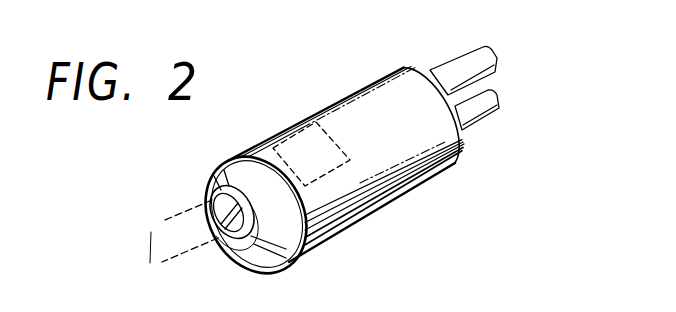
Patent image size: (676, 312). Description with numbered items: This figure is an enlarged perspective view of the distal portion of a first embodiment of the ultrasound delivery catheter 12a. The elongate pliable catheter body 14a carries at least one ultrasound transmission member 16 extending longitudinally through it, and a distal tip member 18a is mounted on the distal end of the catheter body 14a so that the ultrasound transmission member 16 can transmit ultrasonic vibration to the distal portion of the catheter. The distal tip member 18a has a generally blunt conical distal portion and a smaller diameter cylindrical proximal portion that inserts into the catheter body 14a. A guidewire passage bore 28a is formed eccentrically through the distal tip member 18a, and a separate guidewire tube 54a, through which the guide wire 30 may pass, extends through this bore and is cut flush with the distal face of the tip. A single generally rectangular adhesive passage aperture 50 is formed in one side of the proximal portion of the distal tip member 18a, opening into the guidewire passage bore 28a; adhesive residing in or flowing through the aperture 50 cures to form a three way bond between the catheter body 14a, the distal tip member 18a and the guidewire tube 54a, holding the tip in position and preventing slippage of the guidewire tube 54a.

The ultrasound delivery catheter 12a is at (370, 235).
The catheter body 14a is at (352, 112).
The ultrasound transmission member 16 is at (473, 108).
The guide wire 30 is at (458, 67).
The adhesive passage aperture 50 is at (305, 157).
The distal tip member 18a is at (215, 183).
The guidewire passage bore 28a is at (210, 226).
The guidewire tube 54a is at (216, 235).